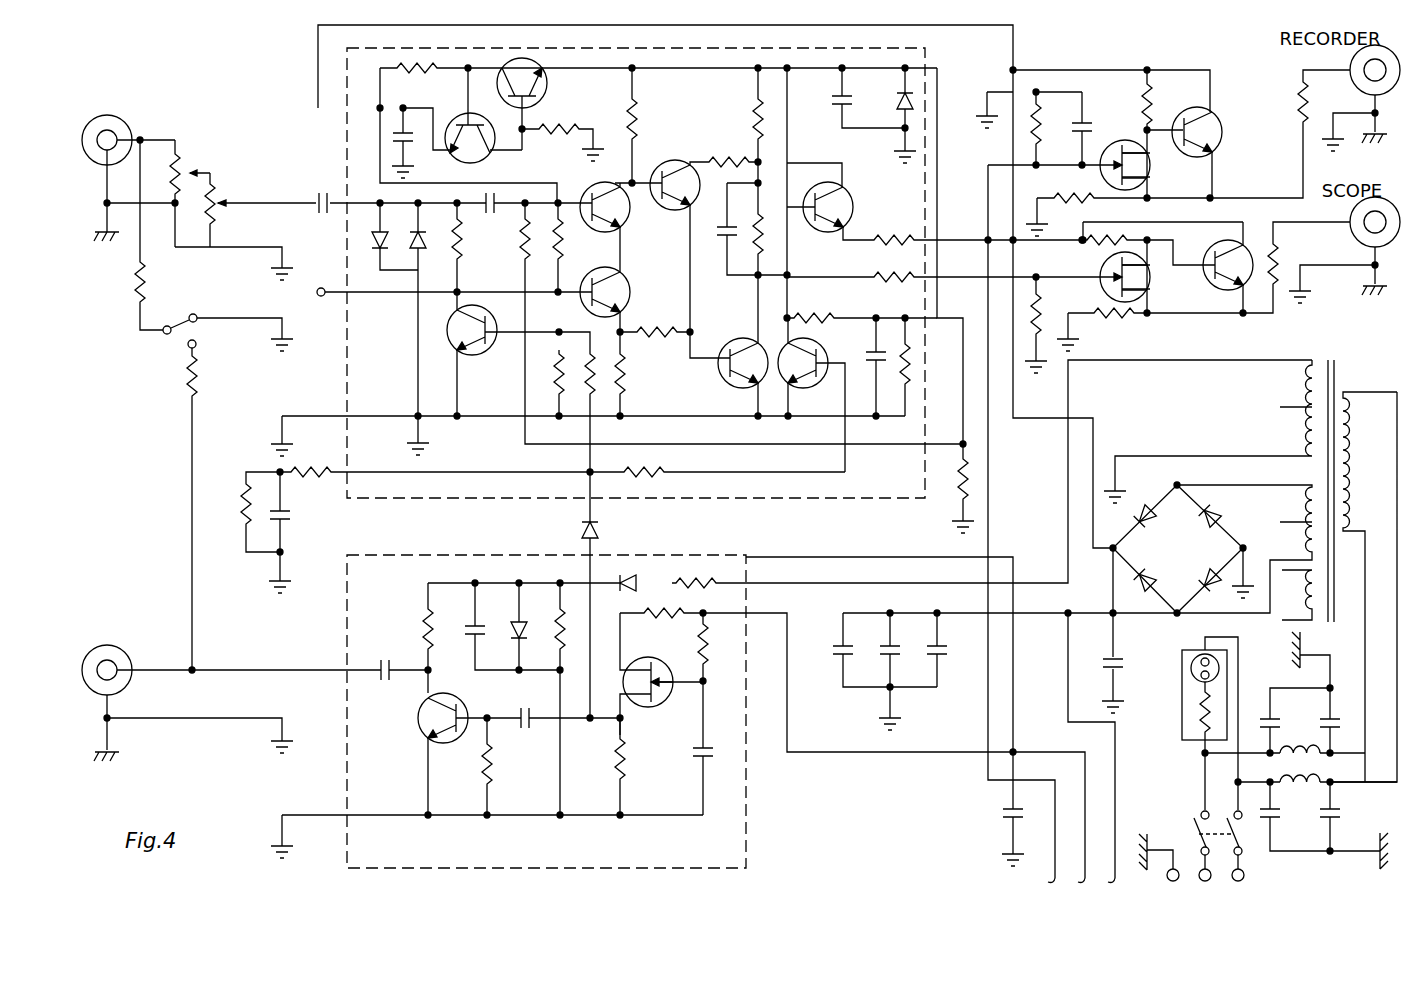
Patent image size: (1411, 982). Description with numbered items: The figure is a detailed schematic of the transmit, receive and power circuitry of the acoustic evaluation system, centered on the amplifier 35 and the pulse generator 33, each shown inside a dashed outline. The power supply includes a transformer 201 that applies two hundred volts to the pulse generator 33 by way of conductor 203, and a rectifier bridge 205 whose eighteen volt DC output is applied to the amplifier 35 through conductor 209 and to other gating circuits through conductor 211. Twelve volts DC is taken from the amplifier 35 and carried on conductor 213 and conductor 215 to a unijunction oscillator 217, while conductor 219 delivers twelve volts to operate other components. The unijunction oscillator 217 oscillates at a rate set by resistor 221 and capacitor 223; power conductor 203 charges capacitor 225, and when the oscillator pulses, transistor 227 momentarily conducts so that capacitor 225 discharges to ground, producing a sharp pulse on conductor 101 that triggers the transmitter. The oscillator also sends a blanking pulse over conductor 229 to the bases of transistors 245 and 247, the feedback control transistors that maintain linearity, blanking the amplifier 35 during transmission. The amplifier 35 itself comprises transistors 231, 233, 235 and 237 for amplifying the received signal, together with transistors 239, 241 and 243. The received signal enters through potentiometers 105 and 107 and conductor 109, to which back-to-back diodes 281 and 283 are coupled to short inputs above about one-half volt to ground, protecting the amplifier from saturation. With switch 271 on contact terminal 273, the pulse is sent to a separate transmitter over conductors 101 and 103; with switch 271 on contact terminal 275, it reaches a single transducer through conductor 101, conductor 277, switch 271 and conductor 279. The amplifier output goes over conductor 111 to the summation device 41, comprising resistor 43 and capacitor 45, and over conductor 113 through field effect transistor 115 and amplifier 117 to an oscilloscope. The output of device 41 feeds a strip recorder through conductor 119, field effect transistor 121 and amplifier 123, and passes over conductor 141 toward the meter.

The pulse generator 33 is at (665, 554).
The amplifier 35 is at (346, 132).
The summation device 41 is at (1102, 68).
The resistor 43 is at (1040, 138).
The capacitor 45 is at (1090, 122).
The conductor 101 is at (292, 668).
The conductor 103 is at (150, 666).
The potentiometer 105 is at (185, 165).
The potentiometer 107 is at (222, 197).
The conductor 109 is at (285, 207).
The conductor 111 is at (965, 238).
The conductor 113 is at (968, 280).
The field effect transistor 115 is at (1100, 268).
The amplifier 117 is at (1215, 285).
The conductor 119 is at (1090, 170).
The field effect transistor 121 is at (1150, 170).
The amplifier 123 is at (1185, 114).
The conductor 141 is at (990, 458).
The transformer 201 is at (1365, 390).
The conductor 203 is at (828, 582).
The rectifier bridge 205 is at (1160, 505).
The conductor 209 is at (1095, 425).
The conductor 211 is at (1067, 686).
The conductor 213 is at (938, 72).
The conductor 215 is at (920, 754).
The unijunction oscillator 217 is at (658, 706).
The conductor 219 is at (1033, 752).
The resistor 221 is at (640, 755).
The capacitor 223 is at (708, 742).
The capacitor 225 is at (395, 660).
The transistor 227 is at (418, 718).
The conductor 229 is at (586, 568).
The transistor 231 is at (633, 215).
The transistor 233 is at (668, 162).
The transistor 235 is at (742, 338).
The transistor 237 is at (850, 222).
The transistor 239 is at (632, 290).
The transistor 241 is at (460, 120).
The transistor 243 is at (548, 90).
The transistor 245 is at (835, 378).
The transistor 247 is at (490, 350).
The switch 271 is at (180, 324).
The contact terminal 273 is at (198, 315).
The contact terminal 275 is at (197, 345).
The conductor 277 is at (190, 462).
The conductor 279 is at (140, 318).
The diode 281 is at (368, 238).
The diode 283 is at (415, 252).